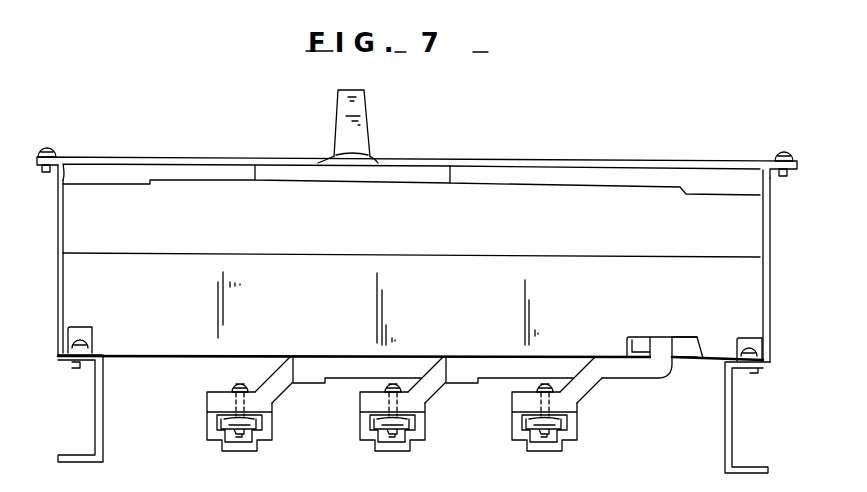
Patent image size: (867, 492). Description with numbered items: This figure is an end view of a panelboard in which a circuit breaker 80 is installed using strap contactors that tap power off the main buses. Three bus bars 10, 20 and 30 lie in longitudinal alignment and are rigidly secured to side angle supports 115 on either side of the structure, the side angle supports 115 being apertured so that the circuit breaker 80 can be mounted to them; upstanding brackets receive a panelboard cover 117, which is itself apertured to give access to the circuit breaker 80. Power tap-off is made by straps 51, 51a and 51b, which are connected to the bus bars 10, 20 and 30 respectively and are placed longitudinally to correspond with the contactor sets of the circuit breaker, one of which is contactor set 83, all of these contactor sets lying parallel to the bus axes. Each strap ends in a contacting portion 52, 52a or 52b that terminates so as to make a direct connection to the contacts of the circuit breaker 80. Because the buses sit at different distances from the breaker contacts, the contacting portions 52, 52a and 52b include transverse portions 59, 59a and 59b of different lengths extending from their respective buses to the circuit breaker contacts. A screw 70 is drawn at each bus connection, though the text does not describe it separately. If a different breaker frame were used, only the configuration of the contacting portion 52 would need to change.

The bus bar 10 is at (234, 415).
The bus bar 20 is at (426, 436).
The bus bar 30 is at (578, 437).
The strap 51 is at (277, 404).
The strap 51a is at (431, 403).
The strap 51b is at (587, 400).
The contacting portion 52 is at (279, 386).
The contacting portion 52a is at (441, 382).
The contacting portion 52b is at (600, 377).
The transverse portion 59 is at (326, 377).
The transverse portion 59a is at (483, 377).
The transverse portion 59b is at (647, 379).
The terminal screw 70 is at (230, 386).
The circuit breaker 80 is at (678, 198).
The contactor set 83 is at (683, 341).
The side angle support 115 is at (105, 393).
The panelboard cover 117 is at (159, 157).